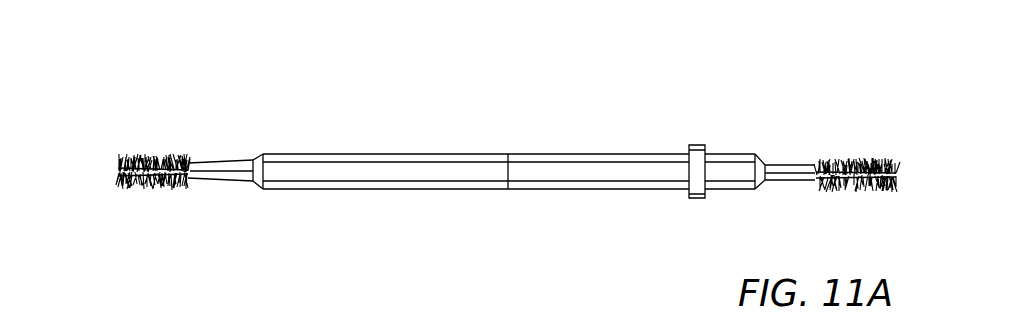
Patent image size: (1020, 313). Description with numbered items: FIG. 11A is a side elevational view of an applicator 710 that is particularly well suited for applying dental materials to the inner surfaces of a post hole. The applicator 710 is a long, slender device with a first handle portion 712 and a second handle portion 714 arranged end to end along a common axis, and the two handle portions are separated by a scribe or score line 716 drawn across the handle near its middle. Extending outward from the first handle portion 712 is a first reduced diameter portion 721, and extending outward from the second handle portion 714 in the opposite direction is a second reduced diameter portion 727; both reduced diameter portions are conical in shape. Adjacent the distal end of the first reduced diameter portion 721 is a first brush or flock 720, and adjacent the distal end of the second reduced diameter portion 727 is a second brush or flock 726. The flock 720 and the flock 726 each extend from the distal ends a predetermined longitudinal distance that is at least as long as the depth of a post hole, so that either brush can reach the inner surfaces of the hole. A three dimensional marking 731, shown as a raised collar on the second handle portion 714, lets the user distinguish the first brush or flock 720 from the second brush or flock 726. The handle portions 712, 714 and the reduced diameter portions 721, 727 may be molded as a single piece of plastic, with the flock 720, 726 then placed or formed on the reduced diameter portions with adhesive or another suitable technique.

The applicator 710 is at (508, 142).
The first handle portion 712 is at (383, 178).
The second handle portion 714 is at (628, 190).
The scribe or score line 716 is at (506, 173).
The first brush or flock 720 is at (160, 158).
The first reduced diameter portion 721 is at (210, 173).
The second brush or flock 726 is at (860, 161).
The second reduced diameter portion 727 is at (785, 173).
The three dimensional marking 731 is at (697, 145).